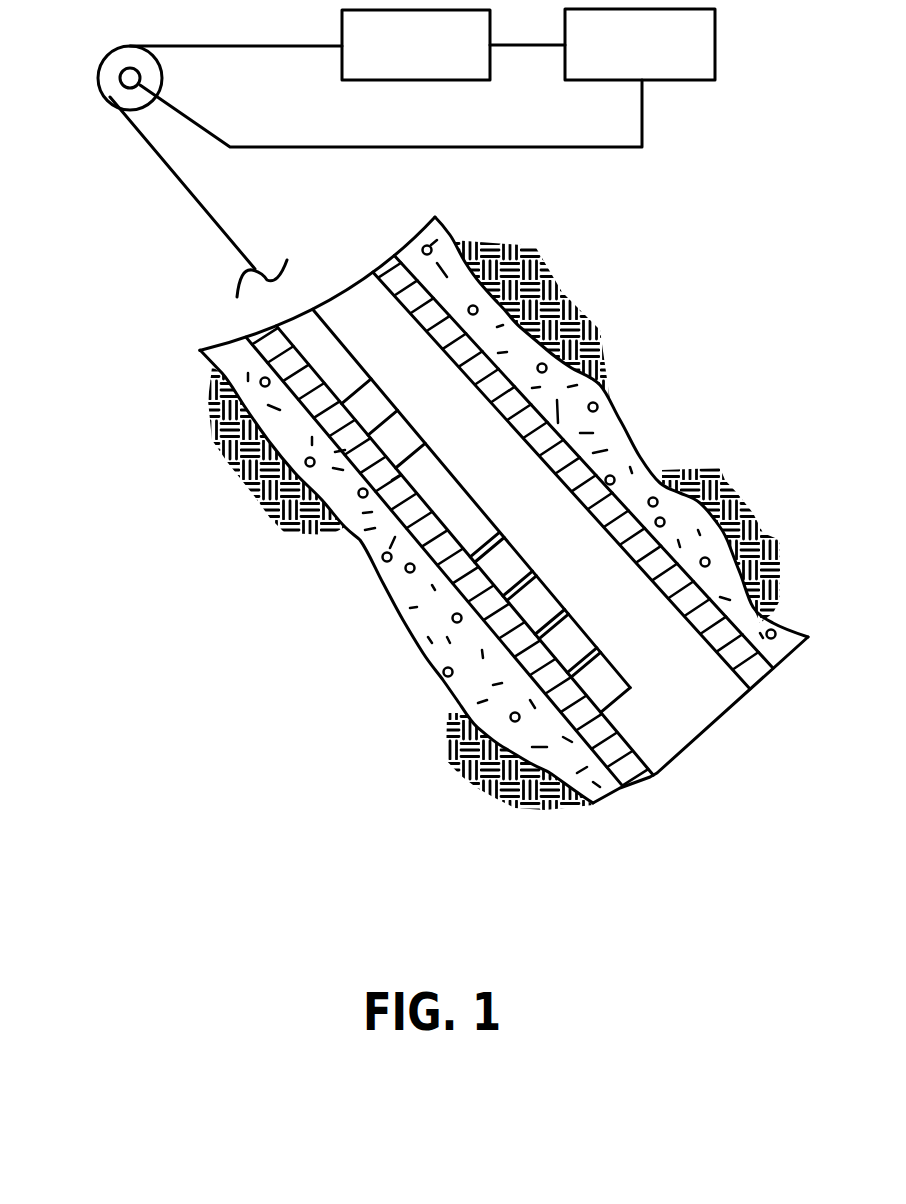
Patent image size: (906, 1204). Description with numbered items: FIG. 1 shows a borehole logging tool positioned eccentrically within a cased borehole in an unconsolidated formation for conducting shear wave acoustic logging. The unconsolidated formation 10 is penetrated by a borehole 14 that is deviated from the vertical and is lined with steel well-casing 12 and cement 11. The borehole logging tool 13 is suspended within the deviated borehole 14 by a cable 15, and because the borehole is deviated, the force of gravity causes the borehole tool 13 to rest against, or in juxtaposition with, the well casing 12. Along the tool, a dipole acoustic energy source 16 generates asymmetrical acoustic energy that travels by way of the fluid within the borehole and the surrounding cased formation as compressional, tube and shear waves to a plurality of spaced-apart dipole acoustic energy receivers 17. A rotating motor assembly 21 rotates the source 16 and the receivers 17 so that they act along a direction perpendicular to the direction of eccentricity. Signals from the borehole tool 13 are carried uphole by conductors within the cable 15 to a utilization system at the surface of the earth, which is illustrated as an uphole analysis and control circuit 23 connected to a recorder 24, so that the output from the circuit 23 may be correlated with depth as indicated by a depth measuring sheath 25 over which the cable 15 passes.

The unconsolidated formation 10 is at (790, 464).
The cement 11 is at (608, 413).
The steel well-casing 12 is at (445, 348).
The borehole logging tool 13 is at (456, 499).
The borehole 14 is at (545, 505).
The cable 15 is at (221, 227).
The dipole acoustic energy source 16 is at (396, 439).
The dipole acoustic energy receivers 17 is at (552, 624).
The rotating motor assembly 21 is at (368, 405).
The uphole analysis and control circuit 23 is at (429, 60).
The recorder 24 is at (656, 60).
The depth measuring sheath 25 is at (112, 52).